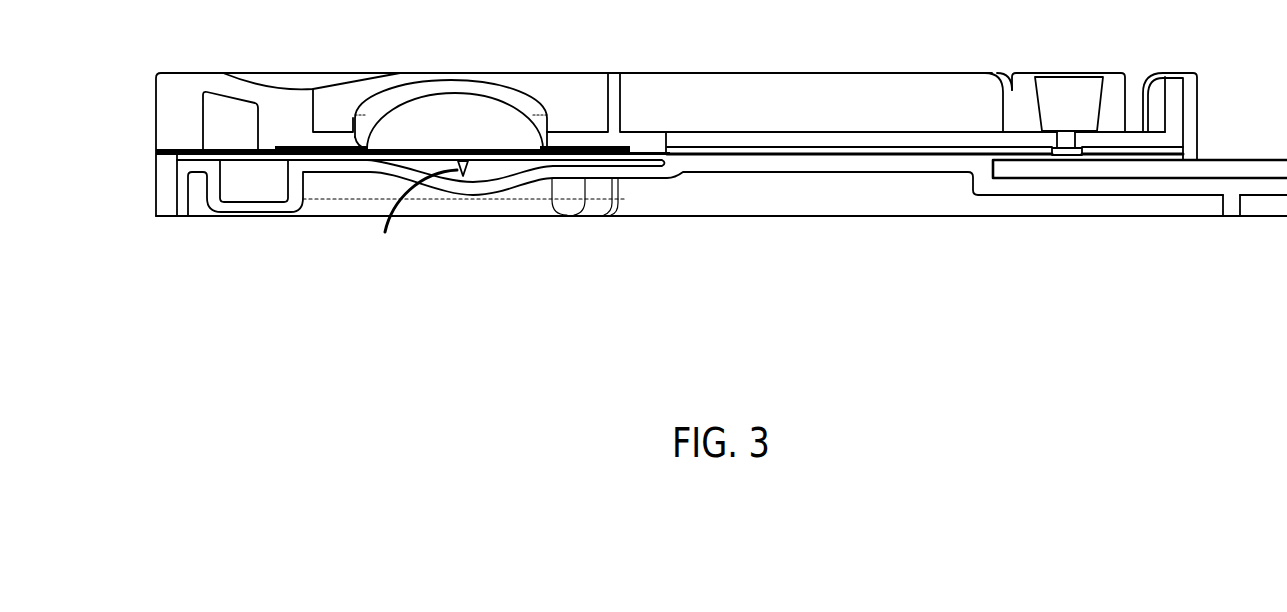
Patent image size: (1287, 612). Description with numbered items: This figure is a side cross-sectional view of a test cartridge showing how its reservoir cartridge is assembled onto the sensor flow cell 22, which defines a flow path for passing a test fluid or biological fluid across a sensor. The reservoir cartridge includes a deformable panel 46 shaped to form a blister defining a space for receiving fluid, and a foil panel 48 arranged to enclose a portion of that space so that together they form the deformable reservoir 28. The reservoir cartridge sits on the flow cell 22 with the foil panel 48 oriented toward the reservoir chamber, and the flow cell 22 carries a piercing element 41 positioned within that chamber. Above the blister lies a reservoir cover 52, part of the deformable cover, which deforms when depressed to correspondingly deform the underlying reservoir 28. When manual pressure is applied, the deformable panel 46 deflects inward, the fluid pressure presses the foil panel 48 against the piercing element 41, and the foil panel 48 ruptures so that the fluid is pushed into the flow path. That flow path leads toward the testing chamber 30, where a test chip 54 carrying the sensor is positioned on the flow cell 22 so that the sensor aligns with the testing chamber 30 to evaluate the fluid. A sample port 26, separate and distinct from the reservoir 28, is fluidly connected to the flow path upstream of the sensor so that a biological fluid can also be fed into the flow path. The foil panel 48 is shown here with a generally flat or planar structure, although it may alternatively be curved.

The sensor flow cell 22 is at (229, 217).
The sample port 26 is at (1067, 83).
The deformable reservoir 28 is at (543, 86).
The testing chamber 30 is at (1063, 153).
The piercing element 41 is at (412, 217).
The deformable panel 46 is at (478, 88).
The foil panel 48 is at (470, 163).
The reservoir cover 52 is at (428, 76).
The test chip 54 is at (1207, 158).